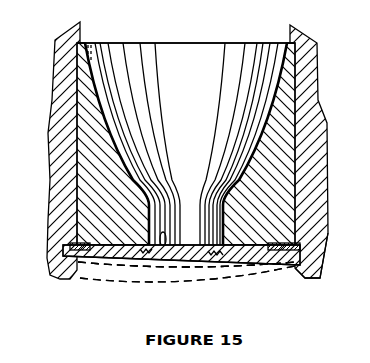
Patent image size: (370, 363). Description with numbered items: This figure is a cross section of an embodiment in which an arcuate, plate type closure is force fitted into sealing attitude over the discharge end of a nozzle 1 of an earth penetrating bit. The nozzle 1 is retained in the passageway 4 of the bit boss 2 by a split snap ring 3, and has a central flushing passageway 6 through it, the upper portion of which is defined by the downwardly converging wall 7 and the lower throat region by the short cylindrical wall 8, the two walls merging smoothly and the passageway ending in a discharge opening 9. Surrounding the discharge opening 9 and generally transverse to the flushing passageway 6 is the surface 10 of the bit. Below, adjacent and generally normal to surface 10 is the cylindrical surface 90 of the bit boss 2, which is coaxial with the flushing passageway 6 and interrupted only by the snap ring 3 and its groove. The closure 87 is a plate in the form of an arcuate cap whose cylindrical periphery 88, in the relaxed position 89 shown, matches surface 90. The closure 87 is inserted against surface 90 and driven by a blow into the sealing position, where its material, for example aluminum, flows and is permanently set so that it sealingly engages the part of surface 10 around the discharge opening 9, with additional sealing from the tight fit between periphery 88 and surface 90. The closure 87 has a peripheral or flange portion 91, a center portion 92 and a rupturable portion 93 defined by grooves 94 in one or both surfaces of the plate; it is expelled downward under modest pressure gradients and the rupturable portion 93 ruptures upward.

The nozzle 1 is at (285, 71).
The bit boss 2 is at (317, 82).
The split snap ring 3 is at (322, 235).
The passageway 4 is at (206, 35).
The flushing passageway 6 is at (195, 74).
The downwardly converging wall 7 is at (92, 67).
The short cylindrical wall 8 is at (239, 144).
The discharge opening 9 is at (189, 239).
The surface 10 is at (268, 243).
The closure 87 is at (260, 266).
The periphery 88 is at (78, 258).
The relaxed position 89 is at (195, 272).
The surface 90 is at (79, 258).
The peripheral or flange portion 91 is at (250, 258).
The center portion 92 is at (217, 256).
The rupturable portion 93 is at (174, 263).
The grooves 94 is at (164, 234).